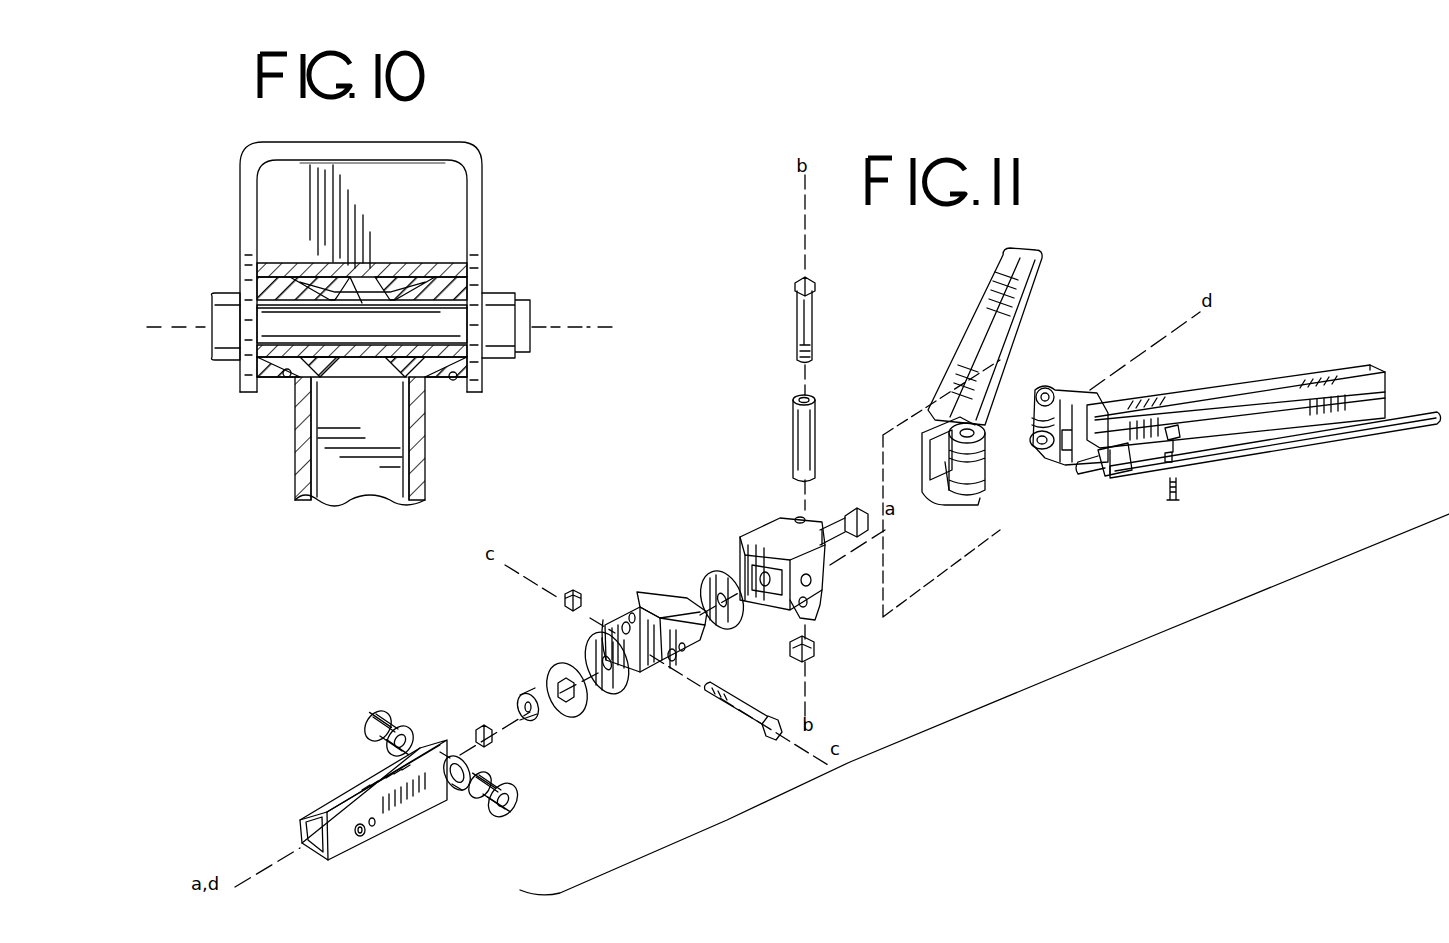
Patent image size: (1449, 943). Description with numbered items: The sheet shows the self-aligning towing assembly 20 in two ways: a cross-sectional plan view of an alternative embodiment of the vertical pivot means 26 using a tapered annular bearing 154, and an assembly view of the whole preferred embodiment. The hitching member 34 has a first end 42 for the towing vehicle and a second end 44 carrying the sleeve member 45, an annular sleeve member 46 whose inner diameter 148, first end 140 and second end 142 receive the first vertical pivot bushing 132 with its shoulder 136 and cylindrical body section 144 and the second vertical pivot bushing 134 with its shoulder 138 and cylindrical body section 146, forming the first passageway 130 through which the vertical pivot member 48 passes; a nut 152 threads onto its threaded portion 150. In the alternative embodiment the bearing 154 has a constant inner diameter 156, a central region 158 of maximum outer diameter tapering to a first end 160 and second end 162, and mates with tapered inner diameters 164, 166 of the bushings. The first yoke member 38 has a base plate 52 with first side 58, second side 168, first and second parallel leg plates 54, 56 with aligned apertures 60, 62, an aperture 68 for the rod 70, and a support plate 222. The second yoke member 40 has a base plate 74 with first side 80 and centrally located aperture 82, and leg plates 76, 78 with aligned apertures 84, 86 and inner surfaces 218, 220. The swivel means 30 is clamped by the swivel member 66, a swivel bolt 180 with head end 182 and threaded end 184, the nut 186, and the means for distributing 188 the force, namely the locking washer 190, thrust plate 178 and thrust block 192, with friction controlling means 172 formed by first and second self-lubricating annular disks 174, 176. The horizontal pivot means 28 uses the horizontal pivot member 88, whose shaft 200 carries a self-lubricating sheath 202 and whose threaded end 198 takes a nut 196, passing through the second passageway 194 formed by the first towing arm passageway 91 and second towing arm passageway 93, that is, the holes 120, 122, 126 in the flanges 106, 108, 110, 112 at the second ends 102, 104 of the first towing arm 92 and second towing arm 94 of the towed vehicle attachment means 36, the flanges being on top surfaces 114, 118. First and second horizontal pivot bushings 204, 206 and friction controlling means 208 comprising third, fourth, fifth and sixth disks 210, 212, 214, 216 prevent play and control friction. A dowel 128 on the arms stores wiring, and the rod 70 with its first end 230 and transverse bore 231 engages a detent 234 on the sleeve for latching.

In FIG. 11, the self-aligning towing assembly 20 is at (990, 632).
In FIG. 10, the vertical pivot means 26 is at (202, 338).
In FIG. 11, the vertical pivot means 26 is at (722, 782).
In FIG. 11, the horizontal pivot means 28 is at (1098, 578).
In FIG. 11, the swivel means 30 is at (878, 696).
In FIG. 10, the hitching member 34 is at (432, 490).
In FIG. 11, the hitching member 34 is at (318, 815).
In FIG. 11, the towed vehicle attachment means 36 is at (1293, 480).
In FIG. 10, the first yoke member 38 is at (438, 240).
In FIG. 11, the first yoke member 38 is at (640, 590).
In FIG. 11, the second yoke member 40 is at (770, 520).
In FIG. 11, the first end of hitching member 42 is at (340, 862).
In FIG. 10, the second end of hitching member 44 is at (490, 455).
In FIG. 11, the second end of hitching member 44 is at (462, 868).
In FIG. 10, the sleeve member 45 is at (305, 268).
In FIG. 11, the sleeve member 45 is at (462, 712).
In FIG. 10, the annular sleeve member 46 is at (305, 261).
In FIG. 11, the annular sleeve member 46 is at (450, 750).
In FIG. 10, the vertical pivot member 48 is at (532, 320).
In FIG. 11, the vertical pivot member 48 is at (733, 708).
In FIG. 10, the base plate of first yoke member 52 is at (440, 152).
In FIG. 11, the base plate of first yoke member 52 is at (650, 592).
In FIG. 10, the first parallel leg plate of first yoke member 54 is at (478, 188).
In FIG. 11, the first parallel leg plate of first yoke member 54 is at (675, 660).
In FIG. 10, the second parallel leg plate of first yoke member 56 is at (248, 178).
In FIG. 11, the second parallel leg plate of first yoke member 56 is at (615, 615).
In FIG. 10, the first side of base plate of first yoke member 58 is at (302, 172).
In FIG. 11, the first side of base plate of first yoke member 58 is at (668, 598).
In FIG. 10, the aligned aperture in first parallel leg plate 60 is at (480, 292).
In FIG. 11, the aligned aperture in first parallel leg plate 60 is at (670, 665).
In FIG. 10, the aligned aperture in second parallel leg plate 62 is at (236, 360).
In FIG. 11, the aligned aperture in second parallel leg plate 62 is at (628, 630).
In FIG. 11, the swivel member 66 is at (834, 525).
In FIG. 11, the aperture in parallel leg plate 68 is at (690, 650).
In FIG. 11, the rod 70 is at (1098, 478).
In FIG. 11, the base plate of second yoke member 74 is at (786, 608).
In FIG. 11, the first parallel leg plate of second yoke member 76 is at (783, 522).
In FIG. 11, the second parallel leg plate of second yoke member 78 is at (812, 600).
In FIG. 11, the first side of base plate of second yoke member 80 is at (800, 655).
In FIG. 11, the centrally located aperture in second yoke base plate 82 is at (745, 555).
In FIG. 11, the aligned aperture in first parallel leg plate of second yoke 84 is at (812, 490).
In FIG. 11, the aligned aperture in second parallel leg plate of second yoke 86 is at (810, 580).
In FIG. 11, the horizontal pivot member 88 is at (812, 330).
In FIG. 11, the first towing arm passageway 91 is at (1045, 520).
In FIG. 11, the first towing arm 92 is at (1345, 375).
In FIG. 11, the second towing arm passageway 93 is at (980, 340).
In FIG. 11, the second towing arm 94 is at (1015, 265).
In FIG. 11, the second end of first towing arm 102 is at (1107, 545).
In FIG. 11, the second end of second towing arm 104 is at (940, 380).
In FIG. 11, the first flange on first towing arm 106 is at (1070, 395).
In FIG. 11, the second flange on first towing arm 108 is at (1050, 460).
In FIG. 11, the first flange on second towing arm 110 is at (955, 415).
In FIG. 11, the second flange on second towing arm 112 is at (948, 485).
In FIG. 11, the top surface of first towing arm 114 is at (1375, 368).
In FIG. 11, the top surface of second towing arm 118 is at (1032, 247).
In FIG. 11, the hole in first flange of first towing arm 120 is at (1063, 398).
In FIG. 11, the hole in second flange of first towing arm 122 is at (1062, 465).
In FIG. 11, the hole in second flange of second towing arm 126 is at (985, 420).
In FIG. 11, the dowel 128 is at (1335, 432).
In FIG. 10, the first passageway 130 is at (228, 280).
In FIG. 11, the first passageway 130 is at (525, 825).
In FIG. 10, the first vertical pivot bushing 132 is at (425, 378).
In FIG. 11, the first vertical pivot bushing 132 is at (500, 818).
In FIG. 10, the second vertical pivot bushing 134 is at (280, 380).
In FIG. 11, the second vertical pivot bushing 134 is at (388, 728).
In FIG. 10, the shoulder of first vertical pivot bushing 136 is at (470, 248).
In FIG. 11, the shoulder of first vertical pivot bushing 136 is at (510, 790).
In FIG. 10, the shoulder of second vertical pivot bushing 138 is at (258, 270).
In FIG. 11, the shoulder of second vertical pivot bushing 138 is at (392, 715).
In FIG. 10, the first end of annular sleeve member 140 is at (470, 250).
In FIG. 11, the first end of annular sleeve member 140 is at (500, 750).
In FIG. 10, the second end of annular sleeve member 142 is at (272, 212).
In FIG. 11, the second end of annular sleeve member 142 is at (380, 762).
In FIG. 10, the cylindrical body section of first vertical pivot bushing 144 is at (400, 355).
In FIG. 11, the cylindrical body section of first vertical pivot bushing 144 is at (482, 800).
In FIG. 10, the cylindrical body section of second vertical pivot bushing 146 is at (288, 385).
In FIG. 11, the cylindrical body section of second vertical pivot bushing 146 is at (412, 720).
In FIG. 10, the inner diameter of annular sleeve member 148 is at (400, 278).
In FIG. 11, the inner diameter of annular sleeve member 148 is at (455, 790).
In FIG. 10, the threaded portion of vertical pivot member 150 is at (512, 383).
In FIG. 11, the threaded portion of vertical pivot member 150 is at (703, 715).
In FIG. 10, the nut 152 is at (500, 372).
In FIG. 11, the nut 152 is at (570, 590).
In FIG. 10, the tapered annular bearing 154 is at (322, 392).
In FIG. 10, the constant inner diameter of tapered annular bearing 156 is at (358, 272).
In FIG. 10, the central region of tapered annular bearing 158 is at (342, 400).
In FIG. 10, the first end of tapered annular bearing 160 is at (398, 385).
In FIG. 10, the second end of tapered annular bearing 162 is at (318, 392).
In FIG. 10, the tapered inner diameter of first vertical pivot bushing 164 is at (432, 372).
In FIG. 10, the tapered inner diameter of second vertical pivot bushing 166 is at (300, 358).
In FIG. 10, the second side of base plate of first yoke member 168 is at (395, 142).
In FIG. 11, the friction controlling means 172 is at (690, 515).
In FIG. 11, the first self-lubricating annular disk 174 is at (712, 592).
In FIG. 11, the second self-lubricating annular disk 176 is at (588, 658).
In FIG. 11, the thrust plate 178 is at (550, 690).
In FIG. 11, the swivel bolt 180 is at (852, 548).
In FIG. 11, the head end of swivel bolt 182 is at (865, 527).
In FIG. 11, the threaded end of swivel bolt 184 is at (830, 557).
In FIG. 11, the nut 186 is at (543, 718).
In FIG. 11, the means for distributing clamping force 188 is at (470, 632).
In FIG. 11, the locking washer 190 is at (500, 690).
In FIG. 11, the thrust block 192 is at (762, 528).
In FIG. 11, the second passageway 194 is at (976, 553).
In FIG. 11, the nut 196 is at (812, 650).
In FIG. 11, the threaded end of horizontal pivot member 198 is at (772, 350).
In FIG. 11, the shaft of horizontal pivot member 200 is at (797, 312).
In FIG. 11, the self-lubricating sheath 202 is at (815, 428).
In FIG. 11, the first horizontal pivot bushing 204 is at (1040, 395).
In FIG. 11, the second horizontal pivot bushing 206 is at (955, 495).
In FIG. 11, the friction controlling means 208 is at (1075, 570).
In FIG. 11, the third self-lubricating annular disk 210 is at (948, 435).
In FIG. 11, the fourth self-lubricating annular disk 212 is at (942, 466).
In FIG. 11, the fifth self-lubricating annular disk 214 is at (1035, 445).
In FIG. 11, the sixth self-lubricating annular disk 216 is at (1040, 500).
In FIG. 11, the inner surface of first parallel leg plate of second yoke 218 is at (820, 520).
In FIG. 11, the inner surface of second parallel leg plate of second yoke 220 is at (808, 612).
In FIG. 11, the support plate 222 is at (772, 600).
In FIG. 11, the first end of rod 230 is at (1082, 488).
In FIG. 11, the transverse bore 231 is at (1085, 440).
In FIG. 11, the detent 234 is at (510, 760).